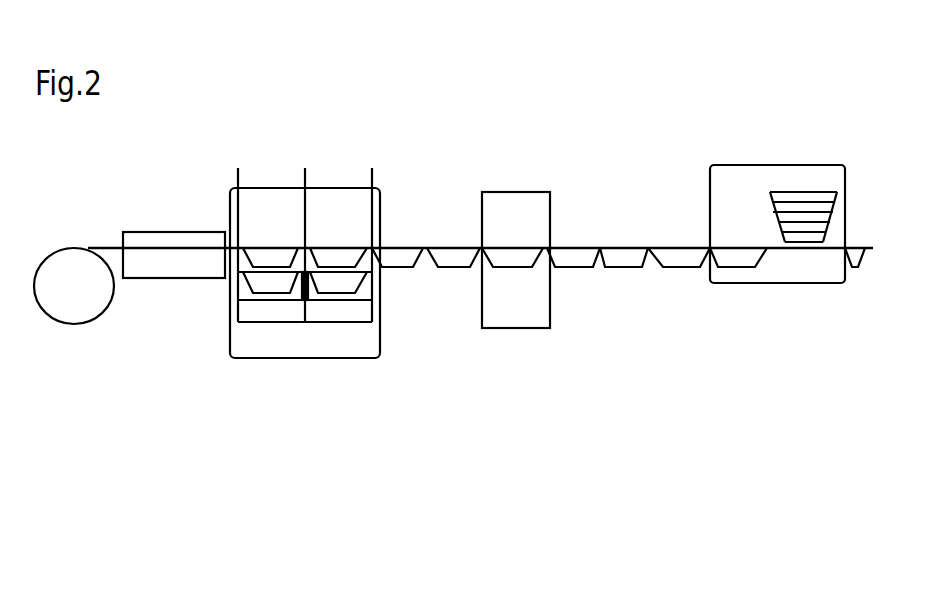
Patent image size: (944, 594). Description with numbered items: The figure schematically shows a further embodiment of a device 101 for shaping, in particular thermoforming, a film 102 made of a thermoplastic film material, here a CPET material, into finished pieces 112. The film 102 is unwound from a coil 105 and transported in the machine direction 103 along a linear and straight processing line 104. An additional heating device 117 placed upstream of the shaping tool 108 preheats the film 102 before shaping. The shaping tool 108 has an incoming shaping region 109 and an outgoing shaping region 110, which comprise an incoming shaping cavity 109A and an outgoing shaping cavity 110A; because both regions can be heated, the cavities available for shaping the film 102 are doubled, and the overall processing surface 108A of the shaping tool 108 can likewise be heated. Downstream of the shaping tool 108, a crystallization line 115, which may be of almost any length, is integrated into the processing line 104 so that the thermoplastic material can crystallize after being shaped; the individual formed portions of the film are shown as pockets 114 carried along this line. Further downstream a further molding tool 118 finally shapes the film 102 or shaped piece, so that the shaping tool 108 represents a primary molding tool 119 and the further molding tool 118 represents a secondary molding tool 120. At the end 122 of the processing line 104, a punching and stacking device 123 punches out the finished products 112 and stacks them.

The device 101 is at (660, 71).
The film 102 is at (99, 247).
The machine direction 103 is at (674, 148).
The processing line 104 is at (838, 287).
The coil 105 is at (57, 323).
The shaping tool 108 is at (309, 312).
The overall processing surface 108A is at (375, 152).
The incoming shaping region 109 is at (266, 122).
The incoming shaping cavity 109A is at (240, 304).
The outgoing shaping region 110 is at (353, 120).
The outgoing shaping cavity 110A is at (366, 306).
The finished piece 112 is at (807, 192).
The tray 114 is at (445, 267).
The crystallization line 115 is at (434, 220).
The additional heating device 117 is at (160, 232).
The further molding tool 118 is at (518, 192).
The primary molding tool 119 is at (309, 381).
The secondary molding tool 120 is at (530, 339).
The end 122 is at (767, 353).
The punching and stacking device 123 is at (778, 165).